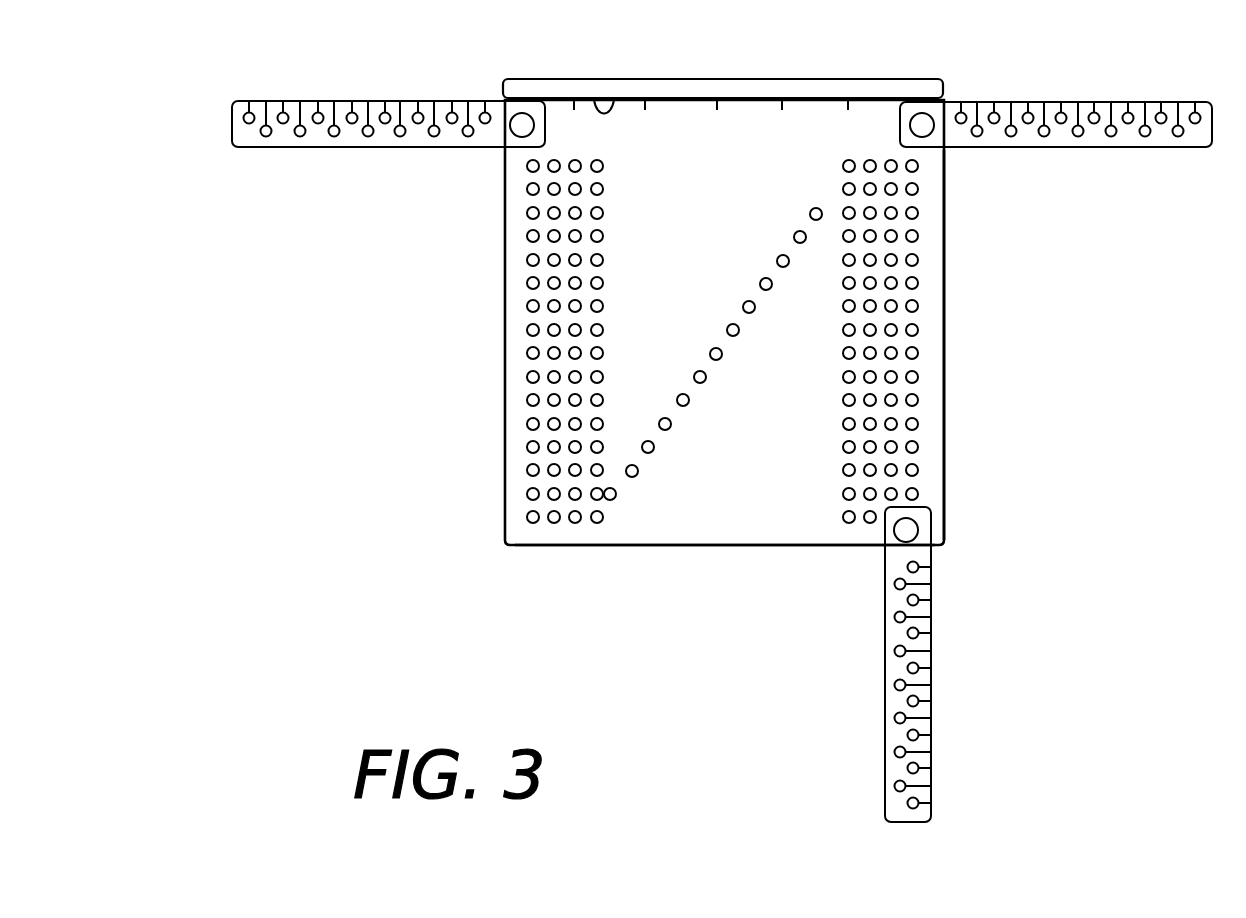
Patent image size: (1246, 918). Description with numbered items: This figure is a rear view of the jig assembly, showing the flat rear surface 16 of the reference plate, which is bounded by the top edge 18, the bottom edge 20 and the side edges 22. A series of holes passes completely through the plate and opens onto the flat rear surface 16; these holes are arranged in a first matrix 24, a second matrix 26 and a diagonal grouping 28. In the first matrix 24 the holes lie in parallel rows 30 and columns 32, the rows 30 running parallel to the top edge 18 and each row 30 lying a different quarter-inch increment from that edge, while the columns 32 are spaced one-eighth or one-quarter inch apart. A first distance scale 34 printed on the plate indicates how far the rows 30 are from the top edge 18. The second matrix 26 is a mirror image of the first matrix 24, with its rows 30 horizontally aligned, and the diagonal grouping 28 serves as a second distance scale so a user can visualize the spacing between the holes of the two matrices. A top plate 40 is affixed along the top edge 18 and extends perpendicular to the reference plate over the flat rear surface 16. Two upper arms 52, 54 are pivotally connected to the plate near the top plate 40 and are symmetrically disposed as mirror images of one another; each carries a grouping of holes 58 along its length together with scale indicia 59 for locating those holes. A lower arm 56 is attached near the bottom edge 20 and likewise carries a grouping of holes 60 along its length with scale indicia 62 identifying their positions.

The flat rear surface 16 is at (760, 517).
The top edge 18 is at (597, 105).
The bottom edge 20 is at (660, 547).
The side edge 22 is at (944, 350).
The first matrix 24 is at (593, 374).
The second matrix 26 is at (828, 460).
The diagonal grouping 28 is at (777, 293).
The parallel rows 30 is at (530, 158).
The columns 32 is at (605, 160).
The first distance scale 34 is at (933, 402).
The top plate 40 is at (778, 88).
The upper arm 52 is at (322, 138).
The upper arm 54 is at (1056, 120).
The lower arm 56 is at (898, 664).
The grouping of holes 58 is at (1162, 112).
The scale indicia 59 is at (1100, 143).
The grouping of holes 60 is at (913, 737).
The scale indicia 62 is at (892, 696).